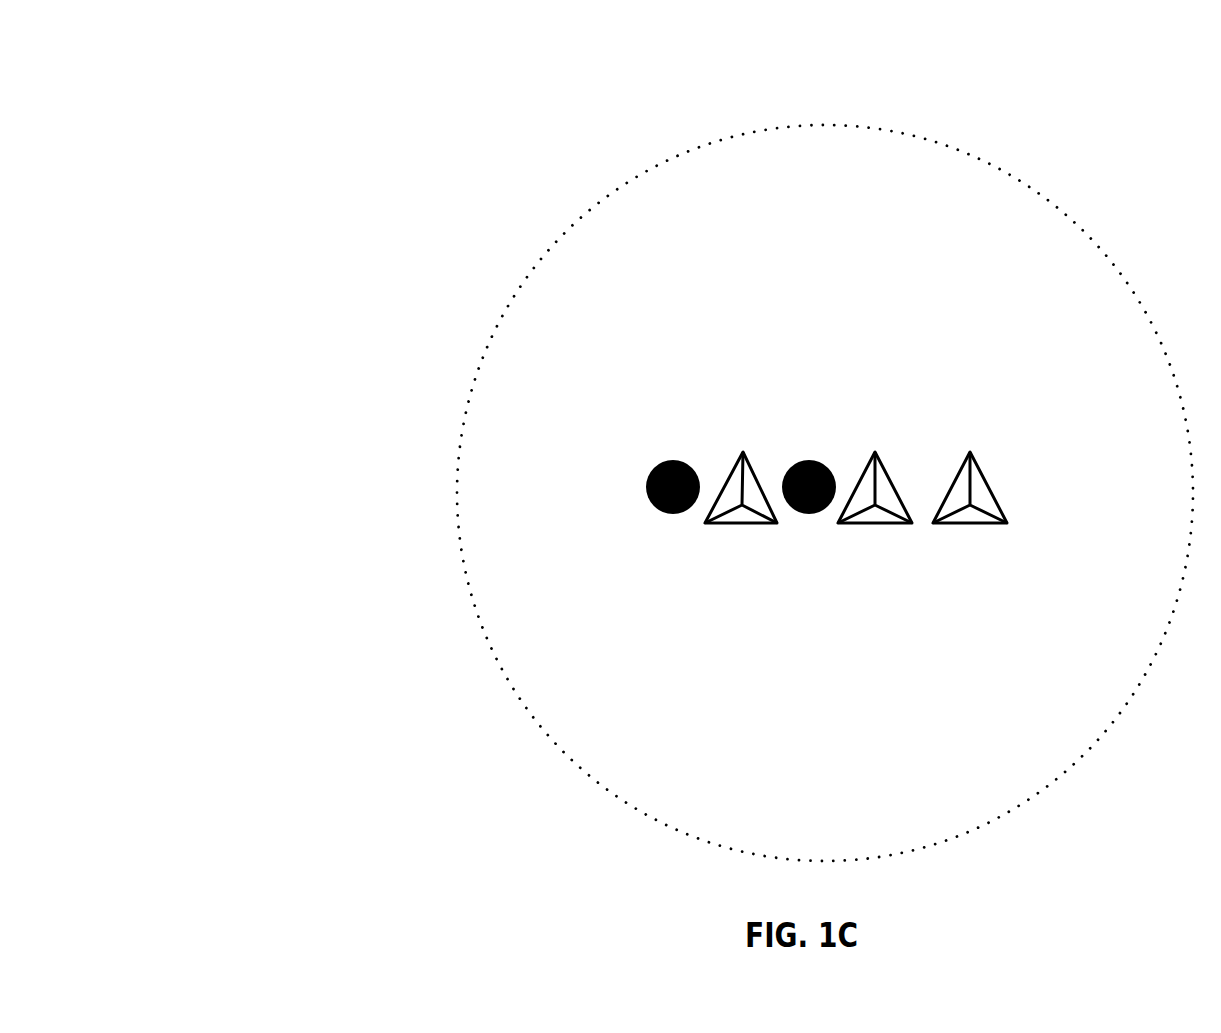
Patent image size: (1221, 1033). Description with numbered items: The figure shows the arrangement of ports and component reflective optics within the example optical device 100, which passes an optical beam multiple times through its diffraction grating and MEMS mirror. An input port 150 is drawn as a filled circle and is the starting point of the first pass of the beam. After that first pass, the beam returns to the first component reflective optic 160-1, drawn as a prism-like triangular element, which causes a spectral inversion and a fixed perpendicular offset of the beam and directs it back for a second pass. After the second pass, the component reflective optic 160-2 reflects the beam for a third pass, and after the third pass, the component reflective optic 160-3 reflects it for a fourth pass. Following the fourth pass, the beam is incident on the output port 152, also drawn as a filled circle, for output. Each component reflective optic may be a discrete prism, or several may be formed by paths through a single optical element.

The optical device 100 is at (311, 50).
The input port 150 is at (851, 412).
The output port 152 is at (715, 412).
The first component reflective optic 160-1 is at (825, 601).
The component reflective optic 160-2 is at (679, 602).
The component reflective optic 160-3 is at (920, 602).